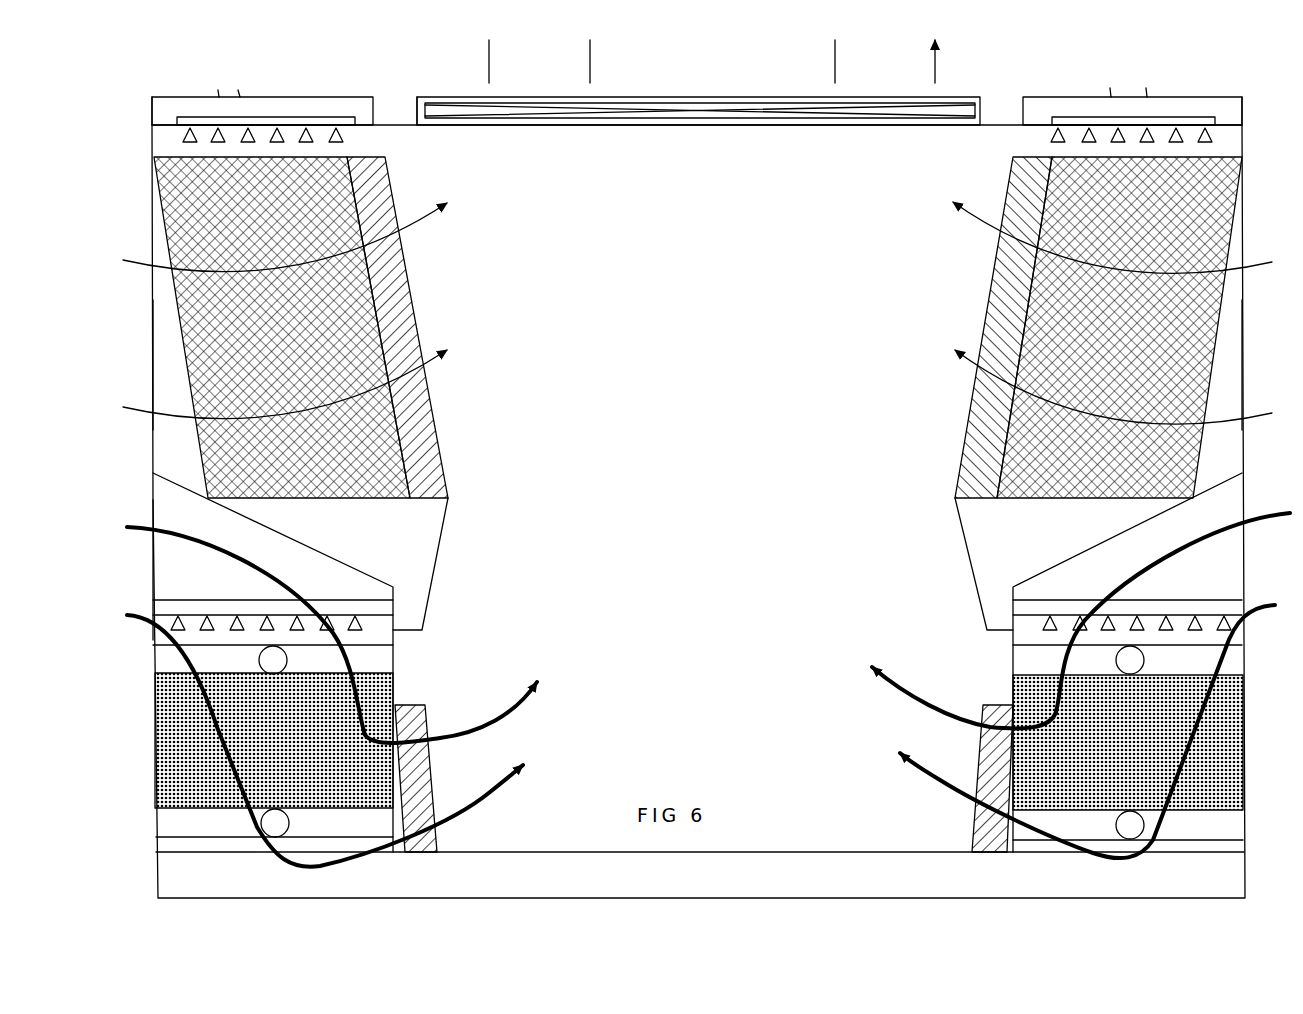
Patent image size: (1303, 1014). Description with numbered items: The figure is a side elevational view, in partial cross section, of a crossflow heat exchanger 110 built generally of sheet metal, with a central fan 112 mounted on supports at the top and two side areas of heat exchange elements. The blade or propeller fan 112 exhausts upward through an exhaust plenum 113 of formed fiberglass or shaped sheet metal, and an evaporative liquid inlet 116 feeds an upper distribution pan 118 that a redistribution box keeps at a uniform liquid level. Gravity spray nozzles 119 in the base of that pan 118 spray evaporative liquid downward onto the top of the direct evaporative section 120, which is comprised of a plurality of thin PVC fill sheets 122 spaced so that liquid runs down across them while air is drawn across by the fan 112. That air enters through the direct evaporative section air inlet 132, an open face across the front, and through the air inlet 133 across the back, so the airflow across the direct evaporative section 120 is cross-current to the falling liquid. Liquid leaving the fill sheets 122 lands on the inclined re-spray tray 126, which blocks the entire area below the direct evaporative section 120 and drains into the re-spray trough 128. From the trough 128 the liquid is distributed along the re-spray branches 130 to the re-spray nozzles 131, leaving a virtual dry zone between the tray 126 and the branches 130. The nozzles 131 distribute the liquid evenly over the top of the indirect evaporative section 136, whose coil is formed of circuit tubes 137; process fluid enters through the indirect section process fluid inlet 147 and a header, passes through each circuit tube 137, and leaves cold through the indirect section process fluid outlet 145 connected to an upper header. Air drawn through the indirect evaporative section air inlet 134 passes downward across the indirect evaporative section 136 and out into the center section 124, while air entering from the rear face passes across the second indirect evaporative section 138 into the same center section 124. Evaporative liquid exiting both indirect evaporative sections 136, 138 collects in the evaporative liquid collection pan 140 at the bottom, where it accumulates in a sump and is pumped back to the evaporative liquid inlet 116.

The heat exchanger 110 is at (987, 127).
The central fan 112 is at (667, 110).
The exhaust plenum 113 is at (417, 110).
The evaporative liquid inlet 116 is at (313, 96).
The distribution plate 118 is at (237, 115).
The gravity spray nozzles 119 is at (342, 140).
The direct evaporative section 120 is at (393, 192).
The fill sheets 122 is at (413, 295).
The center section 124 is at (720, 686).
The re-spray tray 126 is at (353, 560).
The re-spray trough 128 is at (393, 593).
The re-spray branches 130 is at (395, 608).
The re-spray nozzles 131 is at (363, 628).
The direct evaporative section air inlet 132 is at (153, 368).
The air inlet 133 is at (1243, 340).
The indirect evaporative section air inlet 134 is at (153, 573).
The indirect evaporative section 136 is at (397, 693).
The indirect evaporative section circuit tube 137 is at (437, 775).
The second indirect evaporative section 138 is at (1013, 693).
The evaporative liquid collection pan 140 is at (884, 884).
The indirect section process fluid outlet 145 is at (287, 660).
The indirect section process fluid inlet 147 is at (289, 824).